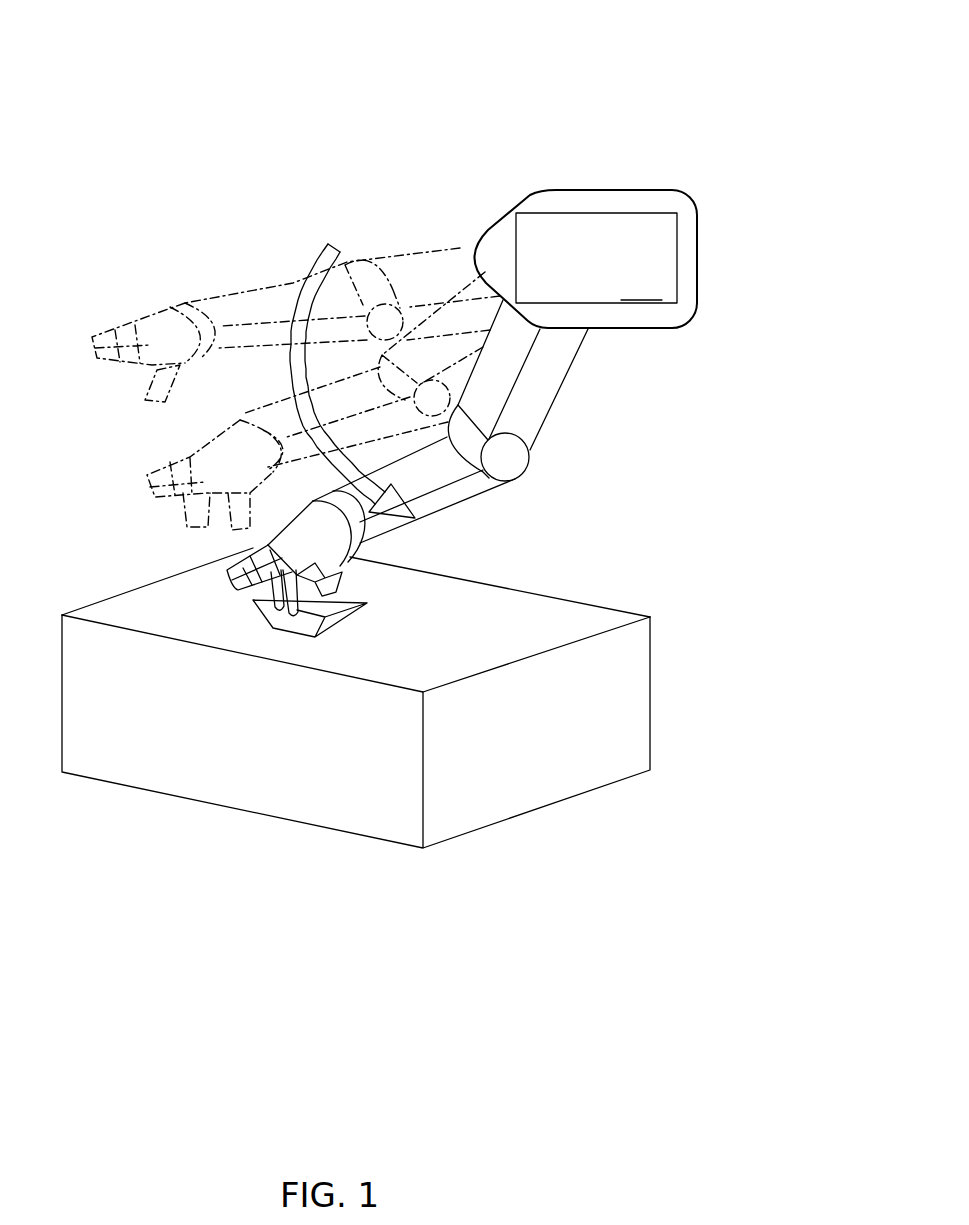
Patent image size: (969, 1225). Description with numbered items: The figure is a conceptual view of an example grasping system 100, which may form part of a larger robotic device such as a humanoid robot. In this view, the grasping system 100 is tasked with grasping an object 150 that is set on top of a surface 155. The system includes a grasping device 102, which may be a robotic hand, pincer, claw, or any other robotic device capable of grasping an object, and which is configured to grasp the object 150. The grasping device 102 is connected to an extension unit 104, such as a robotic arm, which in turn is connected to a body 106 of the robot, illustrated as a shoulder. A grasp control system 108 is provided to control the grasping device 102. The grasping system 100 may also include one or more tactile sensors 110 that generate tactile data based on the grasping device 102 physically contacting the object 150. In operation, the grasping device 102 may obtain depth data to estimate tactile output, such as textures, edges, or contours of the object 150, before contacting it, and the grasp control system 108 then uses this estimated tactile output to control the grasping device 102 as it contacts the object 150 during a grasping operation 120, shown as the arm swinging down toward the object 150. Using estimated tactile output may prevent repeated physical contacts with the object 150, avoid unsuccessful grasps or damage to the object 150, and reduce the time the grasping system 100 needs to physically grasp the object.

The grasping system 100 is at (381, 48).
The grasping device 102 is at (350, 558).
The extension unit 104 is at (542, 435).
The body 106 is at (585, 236).
The grasp control system 108 is at (596, 258).
The tactile sensors 110 is at (262, 605).
The grasping operation 120 is at (313, 260).
The object 150 is at (337, 627).
The surface 155 is at (590, 622).